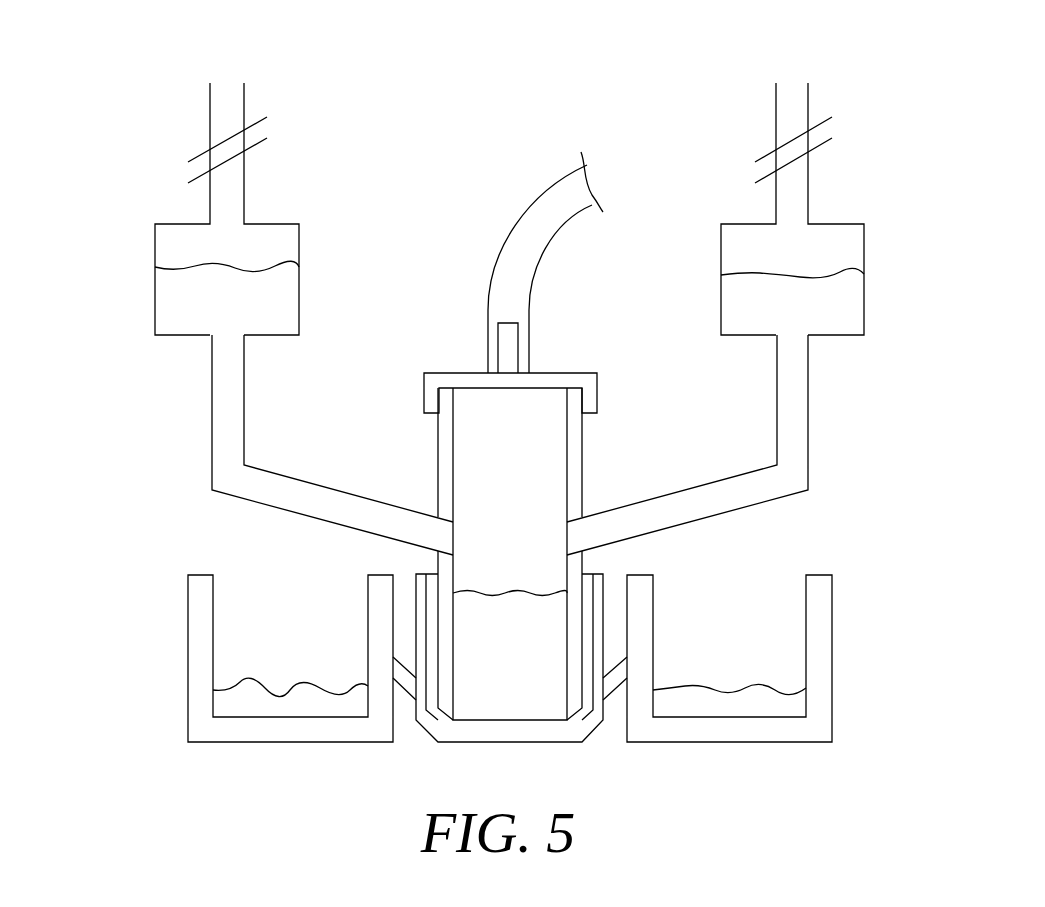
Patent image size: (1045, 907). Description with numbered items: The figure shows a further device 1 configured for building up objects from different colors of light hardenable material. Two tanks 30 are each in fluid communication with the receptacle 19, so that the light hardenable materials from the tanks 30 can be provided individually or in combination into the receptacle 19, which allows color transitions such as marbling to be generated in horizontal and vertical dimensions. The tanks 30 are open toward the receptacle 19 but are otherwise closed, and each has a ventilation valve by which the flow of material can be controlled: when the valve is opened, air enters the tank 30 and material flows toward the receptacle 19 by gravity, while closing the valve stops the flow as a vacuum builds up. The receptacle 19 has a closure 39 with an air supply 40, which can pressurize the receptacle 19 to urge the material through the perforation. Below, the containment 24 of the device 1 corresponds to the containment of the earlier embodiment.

The device 1 is at (98, 163).
The receptacle 19 is at (582, 457).
The containment 24 is at (832, 652).
The tanks 30 is at (276, 235).
The closure 39 is at (466, 378).
The air supply 40 is at (541, 201).